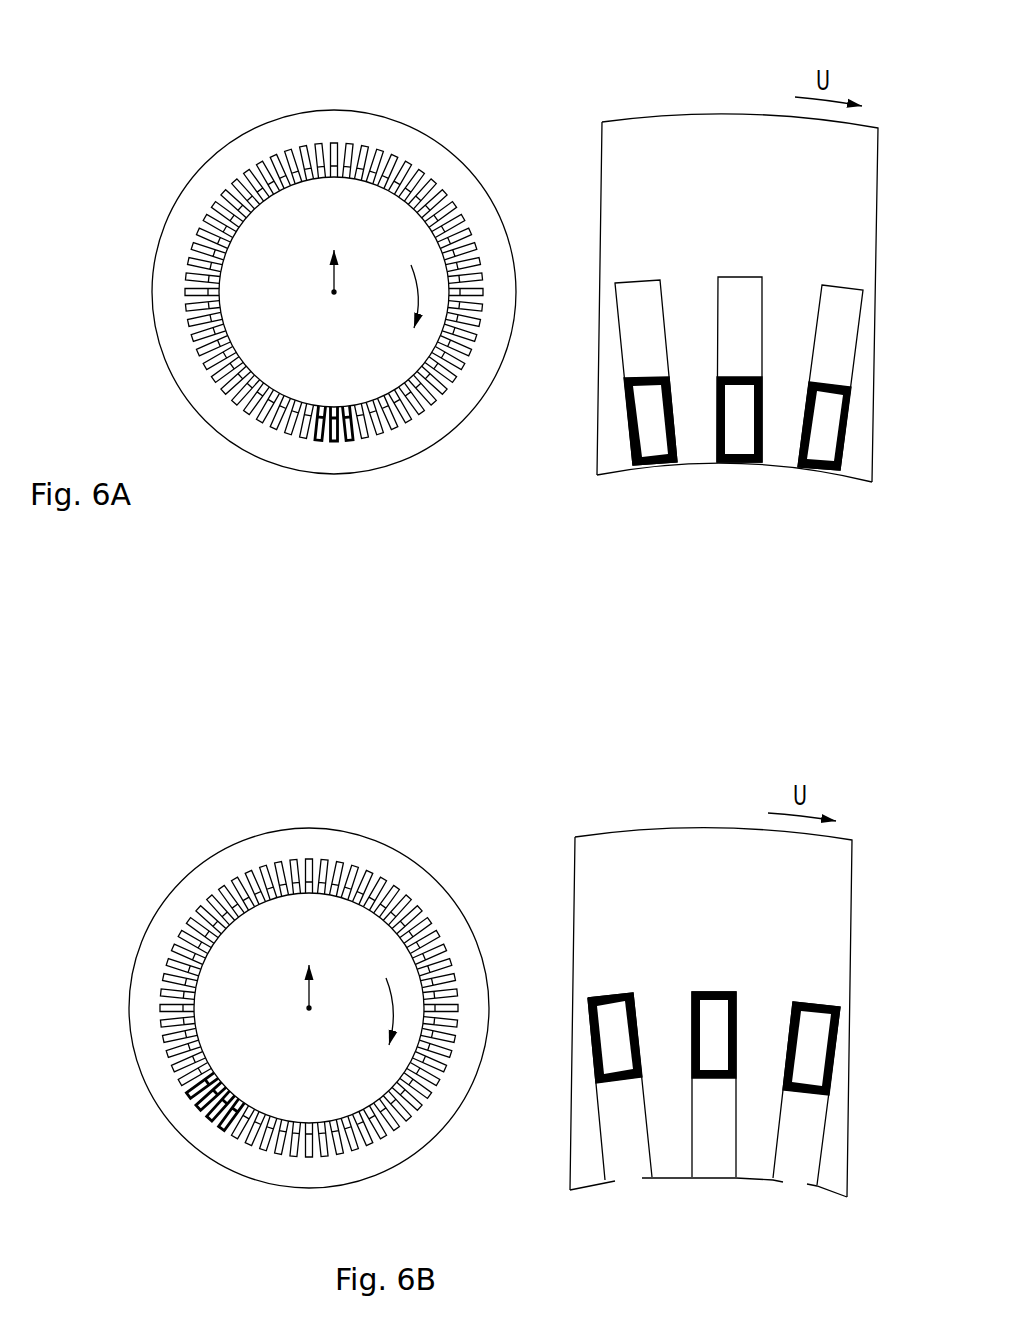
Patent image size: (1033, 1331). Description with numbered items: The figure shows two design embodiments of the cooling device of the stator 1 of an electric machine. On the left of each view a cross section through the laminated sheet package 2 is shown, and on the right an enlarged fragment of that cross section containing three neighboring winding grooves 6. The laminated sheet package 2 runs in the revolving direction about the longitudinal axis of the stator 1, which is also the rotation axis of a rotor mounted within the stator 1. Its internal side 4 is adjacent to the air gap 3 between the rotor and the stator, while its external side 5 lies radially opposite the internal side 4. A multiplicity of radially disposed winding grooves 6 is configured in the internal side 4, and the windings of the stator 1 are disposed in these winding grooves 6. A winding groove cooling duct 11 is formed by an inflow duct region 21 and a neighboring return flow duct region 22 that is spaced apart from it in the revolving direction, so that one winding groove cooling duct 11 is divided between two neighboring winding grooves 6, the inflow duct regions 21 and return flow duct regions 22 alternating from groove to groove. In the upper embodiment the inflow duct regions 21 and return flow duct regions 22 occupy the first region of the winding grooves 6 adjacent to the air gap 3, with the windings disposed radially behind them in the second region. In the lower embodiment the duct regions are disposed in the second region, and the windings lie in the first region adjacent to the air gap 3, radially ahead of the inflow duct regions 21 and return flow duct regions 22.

In FIG. 6A, the stator 1 is at (416, 90).
In FIG. 6B, the stator 1 is at (392, 806).
In FIG. 6A, the laminated sheet package 2 is at (336, 130).
In FIG. 6B, the laminated sheet package 2 is at (311, 846).
In FIG. 6A, the air gap 3 is at (344, 212).
In FIG. 6B, the air gap 3 is at (319, 927).
In FIG. 6A, the internal side 4 is at (281, 203).
In FIG. 6B, the internal side 4 is at (256, 921).
In FIG. 6A, the external side 5 is at (249, 131).
In FIG. 6B, the external side 5 is at (226, 847).
In FIG. 6A, the winding groove 6 is at (318, 448).
In FIG. 6B, the winding groove 6 is at (222, 1064).
In FIG. 6A, the winding groove cooling duct 11 is at (376, 331).
In FIG. 6B, the winding groove cooling duct 11 is at (125, 1178).
In FIG. 6A, the inflow duct region 21 is at (318, 398).
In FIG. 6B, the inflow duct region 21 is at (179, 1099).
In FIG. 6A, the return flow duct region 22 is at (338, 398).
In FIG. 6B, the return flow duct region 22 is at (192, 1117).